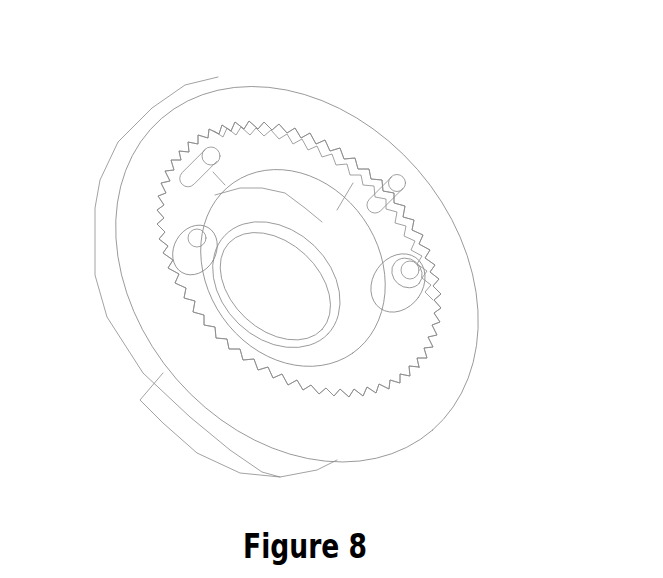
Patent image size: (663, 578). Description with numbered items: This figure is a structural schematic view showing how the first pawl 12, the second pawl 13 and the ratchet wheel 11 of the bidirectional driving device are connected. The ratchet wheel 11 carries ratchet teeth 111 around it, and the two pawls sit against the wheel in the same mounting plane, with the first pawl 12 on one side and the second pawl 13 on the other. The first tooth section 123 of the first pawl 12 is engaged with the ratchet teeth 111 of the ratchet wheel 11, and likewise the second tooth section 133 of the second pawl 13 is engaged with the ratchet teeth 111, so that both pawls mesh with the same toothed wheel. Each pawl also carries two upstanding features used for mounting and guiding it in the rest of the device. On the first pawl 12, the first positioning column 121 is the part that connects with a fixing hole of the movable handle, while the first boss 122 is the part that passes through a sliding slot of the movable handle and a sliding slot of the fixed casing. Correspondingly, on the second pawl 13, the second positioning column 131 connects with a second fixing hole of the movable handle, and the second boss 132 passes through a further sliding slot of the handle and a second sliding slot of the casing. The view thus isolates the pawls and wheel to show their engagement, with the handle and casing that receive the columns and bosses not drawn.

The ratchet wheel 11 is at (285, 100).
The ratchet teeth 111 is at (437, 322).
The first pawl 12 is at (187, 215).
The first positioning column 121 is at (200, 237).
The first boss 122 is at (212, 155).
The first tooth section 123 is at (168, 165).
The second pawl 13 is at (403, 234).
The second positioning column 131 is at (420, 263).
The second boss 132 is at (396, 182).
The second tooth section 133 is at (403, 203).